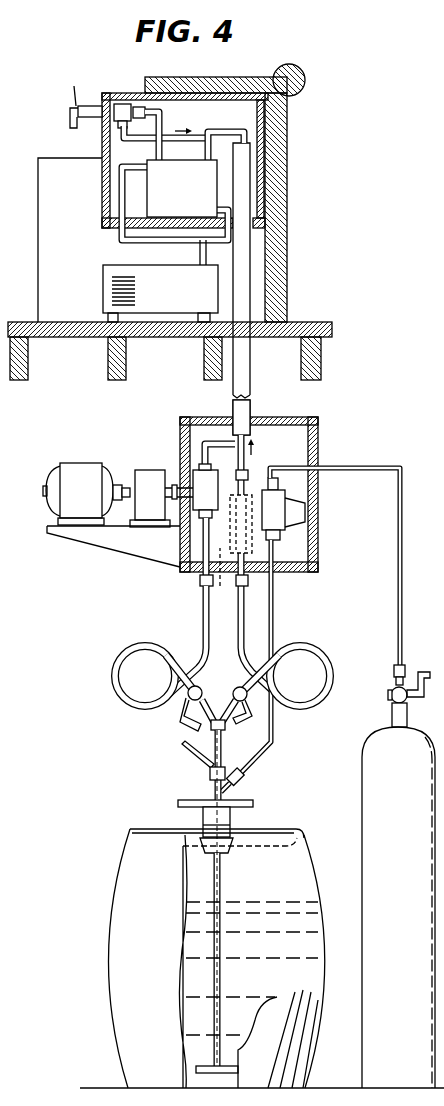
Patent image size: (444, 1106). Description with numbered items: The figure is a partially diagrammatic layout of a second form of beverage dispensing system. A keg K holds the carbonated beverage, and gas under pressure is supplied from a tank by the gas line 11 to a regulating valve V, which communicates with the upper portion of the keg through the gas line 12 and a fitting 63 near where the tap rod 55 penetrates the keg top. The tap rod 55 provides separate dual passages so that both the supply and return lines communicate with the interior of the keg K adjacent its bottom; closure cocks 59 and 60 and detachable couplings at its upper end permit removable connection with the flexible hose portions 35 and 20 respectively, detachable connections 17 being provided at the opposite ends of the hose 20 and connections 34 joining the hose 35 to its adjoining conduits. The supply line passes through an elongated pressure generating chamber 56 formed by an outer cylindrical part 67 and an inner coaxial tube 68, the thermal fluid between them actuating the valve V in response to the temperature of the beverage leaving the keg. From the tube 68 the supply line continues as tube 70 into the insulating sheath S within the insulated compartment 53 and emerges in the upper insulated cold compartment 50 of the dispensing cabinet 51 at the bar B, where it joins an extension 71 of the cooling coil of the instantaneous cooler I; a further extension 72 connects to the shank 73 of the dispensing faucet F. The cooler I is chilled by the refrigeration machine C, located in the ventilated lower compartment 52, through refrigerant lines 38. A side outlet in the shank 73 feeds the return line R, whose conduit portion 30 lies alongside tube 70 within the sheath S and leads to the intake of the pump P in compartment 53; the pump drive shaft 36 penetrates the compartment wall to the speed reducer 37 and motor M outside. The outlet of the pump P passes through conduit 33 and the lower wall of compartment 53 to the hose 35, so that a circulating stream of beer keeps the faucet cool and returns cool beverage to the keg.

The gas line 11 is at (403, 518).
The gas line 12 is at (274, 610).
The detachable connections 17 is at (277, 716).
The flexible hose portion 20 is at (314, 657).
The conduit portion 30 is at (130, 140).
The conduit 33 is at (197, 547).
The connection 34 is at (199, 582).
The hose 35 is at (155, 651).
The pump drive shaft 36 is at (180, 529).
The speed reducer 37 is at (157, 470).
The refrigerant lines 38 is at (203, 248).
The upper insulated cold compartment 50 is at (105, 199).
The dispensing cabinet 51 is at (38, 176).
The ventilated lower compartment 52 is at (65, 318).
The insulated compartment 53 is at (318, 444).
The tap rod 55 is at (226, 875).
The pressure generating chamber 56 is at (221, 578).
The closure valve or cock 59 is at (188, 703).
The closure valve or cock 60 is at (240, 687).
The fitting 63 is at (245, 779).
The outer cylindrical part 67 is at (253, 548).
The inner coaxial tube 68 is at (263, 491).
The tube 70 is at (250, 478).
The extension of the cooling coil 71 is at (247, 129).
The extension of the cooling coil 72 is at (165, 125).
The faucet shank 73 is at (126, 112).
The bar B is at (300, 68).
The refrigeration machine C is at (103, 289).
The dispensing faucet F is at (77, 84).
The instantaneous cooler I is at (156, 188).
The keg K is at (115, 888).
The motor M is at (86, 494).
The pump P is at (221, 483).
The return line R is at (201, 618).
The sheath S is at (252, 365).
The regulating valve V is at (298, 500).